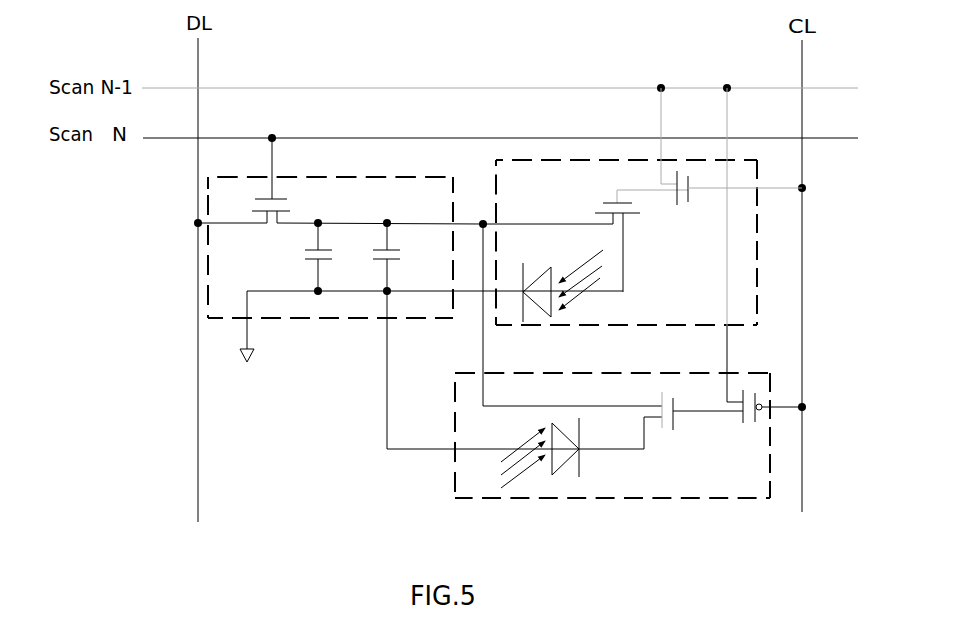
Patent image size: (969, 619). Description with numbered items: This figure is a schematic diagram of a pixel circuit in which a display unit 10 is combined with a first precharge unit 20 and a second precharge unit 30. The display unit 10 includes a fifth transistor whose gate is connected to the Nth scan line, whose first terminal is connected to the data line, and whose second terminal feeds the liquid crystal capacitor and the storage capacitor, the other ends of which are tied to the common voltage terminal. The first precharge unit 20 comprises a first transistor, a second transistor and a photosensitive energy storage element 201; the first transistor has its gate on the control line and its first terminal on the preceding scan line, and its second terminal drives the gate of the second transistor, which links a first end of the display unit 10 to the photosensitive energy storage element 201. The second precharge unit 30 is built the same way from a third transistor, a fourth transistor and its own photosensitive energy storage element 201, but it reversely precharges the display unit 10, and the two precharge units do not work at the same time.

The display unit 10 is at (373, 302).
The first precharge unit 20 is at (712, 311).
The second precharge unit 30 is at (469, 470).
The photosensitive energy storage element 201 is at (548, 305).